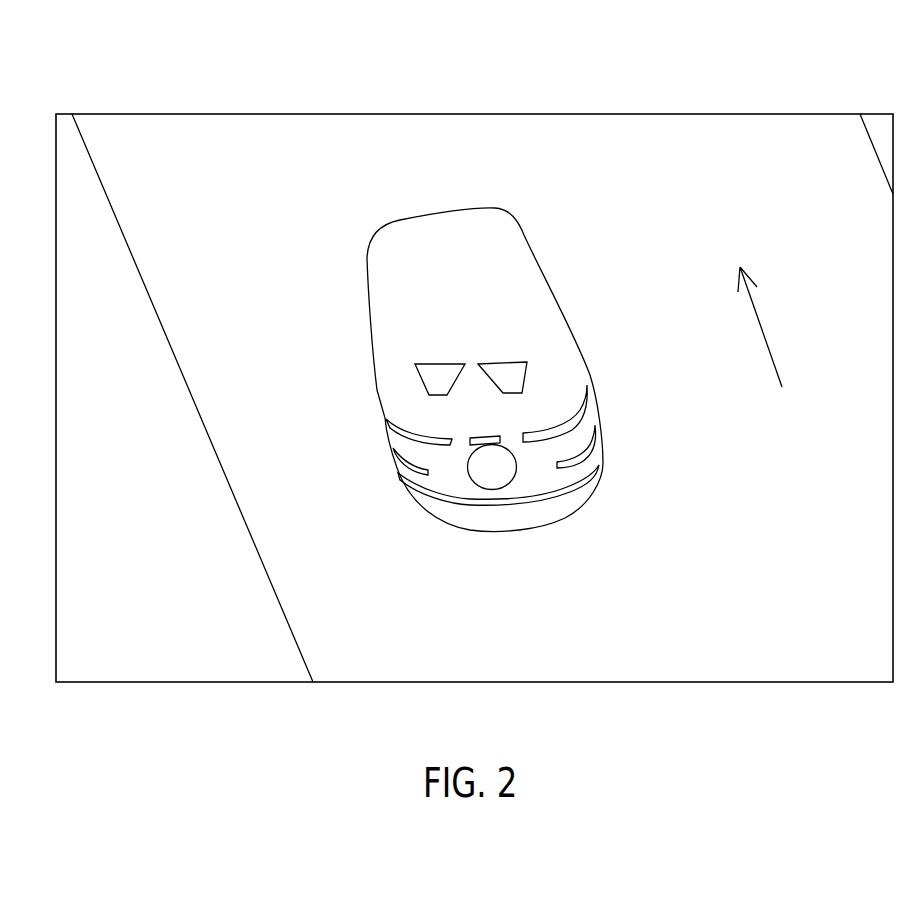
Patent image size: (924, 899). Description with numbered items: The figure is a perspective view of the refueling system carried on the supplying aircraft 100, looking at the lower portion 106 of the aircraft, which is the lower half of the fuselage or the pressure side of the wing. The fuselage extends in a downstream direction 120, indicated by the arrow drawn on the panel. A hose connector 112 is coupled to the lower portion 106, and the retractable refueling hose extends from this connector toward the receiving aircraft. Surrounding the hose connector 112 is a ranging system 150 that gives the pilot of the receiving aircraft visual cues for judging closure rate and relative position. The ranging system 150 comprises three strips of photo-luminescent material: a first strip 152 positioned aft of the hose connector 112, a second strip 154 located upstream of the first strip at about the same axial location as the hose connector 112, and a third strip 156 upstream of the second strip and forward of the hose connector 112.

The supplying aircraft 100 is at (785, 90).
The lower portion 106 is at (807, 690).
The hose connector 112 is at (583, 543).
The downstream direction 120 is at (812, 312).
The ranging system 150 is at (607, 275).
The first strip 152 is at (640, 380).
The second strip 154 is at (648, 422).
The third strip 156 is at (648, 458).